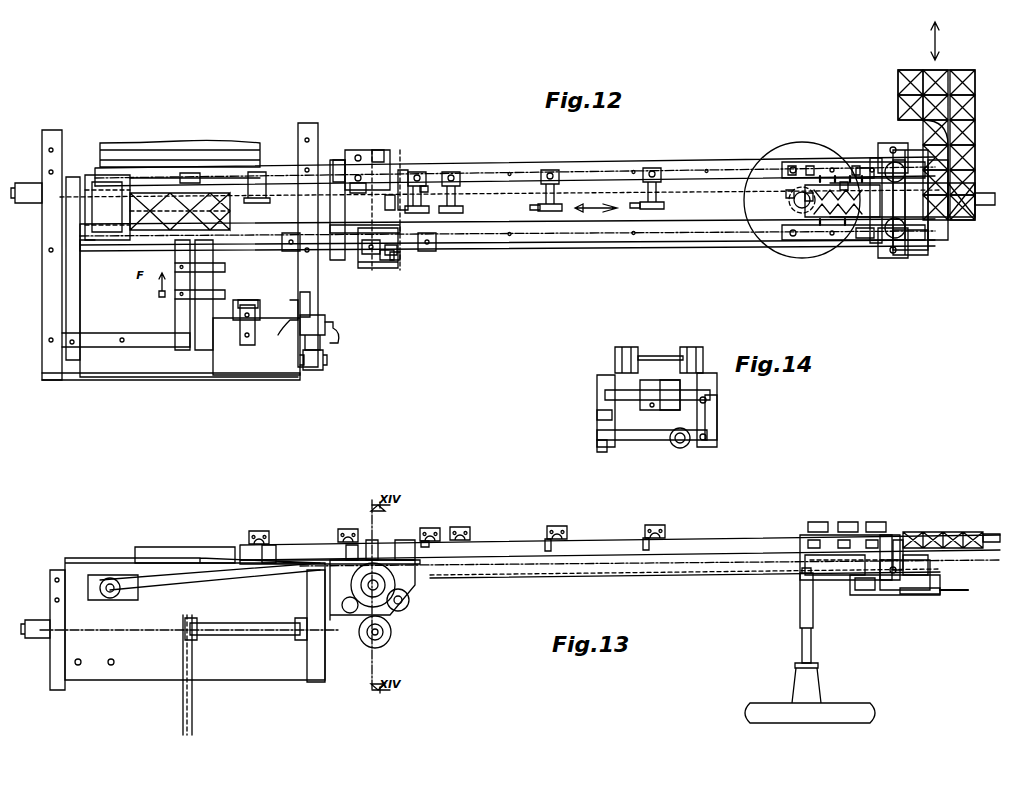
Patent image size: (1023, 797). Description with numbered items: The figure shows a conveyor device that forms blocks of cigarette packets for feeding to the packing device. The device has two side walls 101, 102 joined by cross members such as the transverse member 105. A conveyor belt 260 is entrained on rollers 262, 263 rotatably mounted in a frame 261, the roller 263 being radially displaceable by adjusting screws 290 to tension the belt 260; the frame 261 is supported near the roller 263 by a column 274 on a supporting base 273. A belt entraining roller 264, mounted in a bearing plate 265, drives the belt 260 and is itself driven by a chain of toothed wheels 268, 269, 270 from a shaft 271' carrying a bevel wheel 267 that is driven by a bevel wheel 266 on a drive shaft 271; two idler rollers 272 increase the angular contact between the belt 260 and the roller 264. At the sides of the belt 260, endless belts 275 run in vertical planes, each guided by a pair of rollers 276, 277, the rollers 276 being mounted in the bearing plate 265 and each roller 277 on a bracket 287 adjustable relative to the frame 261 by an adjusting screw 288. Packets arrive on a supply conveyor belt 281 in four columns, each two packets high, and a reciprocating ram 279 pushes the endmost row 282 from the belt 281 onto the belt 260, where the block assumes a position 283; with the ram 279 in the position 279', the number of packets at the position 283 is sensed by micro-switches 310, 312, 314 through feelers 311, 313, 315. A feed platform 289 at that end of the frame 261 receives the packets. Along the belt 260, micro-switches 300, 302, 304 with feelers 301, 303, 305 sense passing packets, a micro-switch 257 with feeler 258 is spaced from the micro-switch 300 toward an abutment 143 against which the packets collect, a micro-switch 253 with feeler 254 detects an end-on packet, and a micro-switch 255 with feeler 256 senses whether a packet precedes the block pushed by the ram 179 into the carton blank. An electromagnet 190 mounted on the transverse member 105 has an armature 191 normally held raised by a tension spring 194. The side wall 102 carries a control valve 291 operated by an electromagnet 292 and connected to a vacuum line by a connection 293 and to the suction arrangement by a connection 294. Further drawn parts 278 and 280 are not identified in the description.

In FIG. 12, the side wall 101 is at (52, 298).
In FIG. 13, the side wall 101 is at (57, 692).
In FIG. 12, the side wall 102 is at (305, 270).
In FIG. 13, the side wall 102 is at (316, 682).
In FIG. 12, the transverse member 105 is at (245, 372).
In FIG. 12, the abutment 143 is at (135, 218).
In FIG. 13, the abutment 143 is at (140, 549).
In FIG. 12, the ram 179 is at (183, 305).
In FIG. 12, the electromagnet 190 is at (256, 346).
In FIG. 12, the electromagnet armature 191 is at (250, 322).
In FIG. 12, the tension spring 194 is at (300, 330).
In FIG. 12, the micro-switch 253 is at (358, 182).
In FIG. 13, the micro-switch 253 is at (354, 530).
In FIG. 12, the feeler 254 is at (352, 173).
In FIG. 13, the feeler 254 is at (342, 543).
In FIG. 12, the micro-switch 255 is at (262, 178).
In FIG. 13, the micro-switch 255 is at (270, 530).
In FIG. 12, the feeler 256 is at (240, 170).
In FIG. 13, the feeler 256 is at (252, 543).
In FIG. 12, the micro-switch 257 is at (425, 185).
In FIG. 13, the micro-switch 257 is at (426, 540).
In FIG. 12, the feeler 258 is at (405, 190).
In FIG. 13, the feeler 258 is at (410, 530).
In FIG. 12, the conveyor belt 260 is at (497, 200).
In FIG. 14, the conveyor belt 260 is at (660, 412).
In FIG. 12, the frame 261 is at (575, 170).
In FIG. 12, the roller 262 is at (90, 226).
In FIG. 13, the roller 262 is at (112, 598).
In FIG. 12, the roller 263 is at (900, 212).
In FIG. 13, the roller 263 is at (882, 586).
In FIG. 12, the belt entraining roller 264 is at (390, 196).
In FIG. 13, the belt entraining roller 264 is at (362, 592).
In FIG. 14, the belt entraining roller 264 is at (682, 408).
In FIG. 12, the bearing plate 265 is at (338, 168).
In FIG. 13, the bearing plate 265 is at (390, 602).
In FIG. 14, the bearing plate 265 is at (712, 422).
In FIG. 13, the bevel wheel 266 is at (362, 637).
In FIG. 14, the bevel wheel 266 is at (687, 446).
In FIG. 13, the bevel wheel 267 is at (372, 642).
In FIG. 14, the bevel wheel 267 is at (672, 447).
In FIG. 12, the toothed wheel 268 is at (362, 262).
In FIG. 13, the toothed wheel 268 is at (380, 640).
In FIG. 14, the toothed wheel 268 is at (600, 440).
In FIG. 12, the toothed wheel 269 is at (382, 258).
In FIG. 13, the toothed wheel 269 is at (396, 612).
In FIG. 12, the toothed wheel 270 is at (372, 255).
In FIG. 13, the toothed wheel 270 is at (405, 592).
In FIG. 14, the toothed wheel 270 is at (600, 398).
In FIG. 12, the drive shaft 271 is at (195, 138).
In FIG. 13, the drive shaft 271 is at (246, 622).
In FIG. 14, the shaft 271' is at (617, 425).
In FIG. 12, the idler rollers 272 is at (330, 227).
In FIG. 13, the idler rollers 272 is at (335, 558).
In FIG. 12, the supporting base 273 is at (790, 256).
In FIG. 13, the supporting base 273 is at (805, 698).
In FIG. 12, the column 274 is at (794, 202).
In FIG. 13, the column 274 is at (800, 614).
In FIG. 12, the endless belts 275 is at (625, 165).
In FIG. 14, the endless belts 275 is at (672, 356).
In FIG. 12, the rollers 276 is at (382, 158).
In FIG. 13, the rollers 276 is at (370, 543).
In FIG. 14, the rollers 276 is at (622, 349).
In FIG. 12, the roller 277 is at (878, 160).
In FIG. 13, the roller 277 is at (884, 537).
In FIG. 12, the frame 278 is at (900, 182).
In FIG. 13, the frame 278 is at (925, 592).
In FIG. 12, the ram 279 is at (988, 184).
In FIG. 13, the ram 279 is at (990, 523).
In FIG. 13, the ram position 279' is at (903, 537).
In FIG. 13, the brace 280 is at (160, 593).
In FIG. 12, the conveyor belt 281 is at (905, 110).
In FIG. 12, the endmost row 282 is at (955, 210).
In FIG. 13, the endmost row 282 is at (975, 530).
In FIG. 12, the position 283 is at (810, 215).
In FIG. 13, the position 283 is at (842, 567).
In FIG. 12, the bracket 287 is at (886, 148).
In FIG. 13, the bracket 287 is at (935, 560).
In FIG. 12, the adjusting screw 288 is at (866, 172).
In FIG. 13, the adjusting screw 288 is at (866, 580).
In FIG. 12, the feed platform 289 is at (907, 235).
In FIG. 13, the feed platform 289 is at (918, 540).
In FIG. 12, the adjusting screws 290 is at (945, 175).
In FIG. 13, the adjusting screws 290 is at (946, 592).
In FIG. 12, the control valve 291 is at (325, 320).
In FIG. 12, the electromagnet 292 is at (314, 368).
In FIG. 12, the connection 293 is at (333, 340).
In FIG. 12, the connection 294 is at (292, 308).
In FIG. 12, the micro-switch 300 is at (451, 210).
In FIG. 13, the micro-switch 300 is at (461, 527).
In FIG. 12, the operating feeler 301 is at (420, 205).
In FIG. 13, the operating feeler 301 is at (437, 540).
In FIG. 12, the micro-switch 302 is at (560, 200).
In FIG. 13, the micro-switch 302 is at (559, 526).
In FIG. 12, the operating feeler 303 is at (533, 205).
In FIG. 13, the operating feeler 303 is at (541, 540).
In FIG. 12, the micro-switch 304 is at (661, 198).
In FIG. 13, the micro-switch 304 is at (658, 525).
In FIG. 12, the operating feeler 305 is at (634, 205).
In FIG. 13, the operating feeler 305 is at (637, 540).
In FIG. 12, the first micro-switch 310 is at (812, 200).
In FIG. 13, the first micro-switch 310 is at (816, 522).
In FIG. 12, the feeler 311 is at (790, 195).
In FIG. 13, the feeler 311 is at (812, 540).
In FIG. 12, the second micro-switch 312 is at (812, 178).
In FIG. 13, the second micro-switch 312 is at (845, 522).
In FIG. 12, the feeler 313 is at (792, 178).
In FIG. 13, the feeler 313 is at (840, 540).
In FIG. 12, the third micro-switch 314 is at (856, 183).
In FIG. 13, the third micro-switch 314 is at (873, 522).
In FIG. 12, the feeler 315 is at (845, 185).
In FIG. 13, the feeler 315 is at (866, 540).